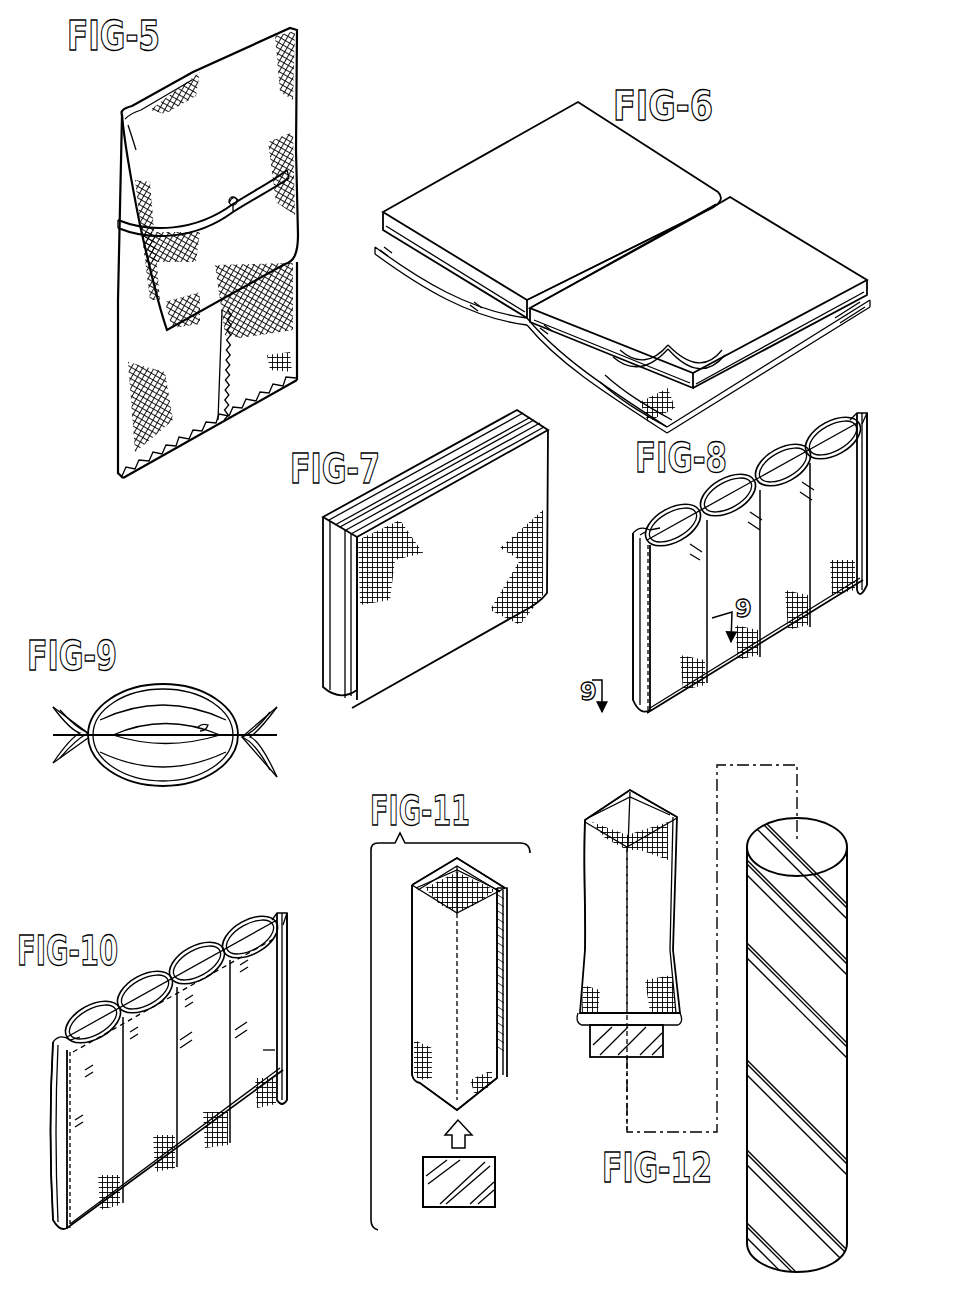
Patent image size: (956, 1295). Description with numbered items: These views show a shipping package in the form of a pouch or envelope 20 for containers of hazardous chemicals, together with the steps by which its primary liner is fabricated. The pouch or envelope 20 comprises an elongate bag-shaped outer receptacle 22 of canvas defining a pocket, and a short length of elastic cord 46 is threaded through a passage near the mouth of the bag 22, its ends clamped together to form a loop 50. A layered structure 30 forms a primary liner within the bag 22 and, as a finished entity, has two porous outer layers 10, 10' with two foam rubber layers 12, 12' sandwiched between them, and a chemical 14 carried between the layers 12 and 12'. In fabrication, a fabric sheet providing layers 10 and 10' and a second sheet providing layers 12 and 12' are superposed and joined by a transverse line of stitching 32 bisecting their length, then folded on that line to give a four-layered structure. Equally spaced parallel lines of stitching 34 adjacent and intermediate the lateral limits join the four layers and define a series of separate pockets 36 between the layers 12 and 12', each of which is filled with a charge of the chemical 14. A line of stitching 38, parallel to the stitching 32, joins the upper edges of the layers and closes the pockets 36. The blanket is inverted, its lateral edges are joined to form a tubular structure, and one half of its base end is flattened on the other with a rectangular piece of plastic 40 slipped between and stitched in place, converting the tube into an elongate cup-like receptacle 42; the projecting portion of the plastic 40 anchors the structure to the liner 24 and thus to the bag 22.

In FIG. 6, the outer layer 10 is at (617, 340).
In FIG. 7, the outer layer 10 is at (435, 554).
In FIG. 8, the outer layer 10 is at (700, 478).
In FIG. 9, the outer layer 10 is at (165, 706).
In FIG. 10, the outer layer 10 is at (143, 970).
In FIG. 11, the outer layer 10 is at (444, 984).
In FIG. 12, the outer layer 10 is at (646, 960).
In FIG. 6, the outer layer 10' is at (731, 367).
In FIG. 7, the outer layer 10' is at (477, 569).
In FIG. 8, the outer layer 10' is at (750, 572).
In FIG. 9, the outer layer 10' is at (165, 757).
In FIG. 10, the outer layer 10' is at (194, 1071).
In FIG. 11, the outer layer 10' is at (440, 891).
In FIG. 12, the outer layer 10' is at (649, 797).
In FIG. 6, the foam rubber layer 12 is at (552, 210).
In FIG. 7, the foam rubber layer 12 is at (426, 461).
In FIG. 8, the foam rubber layer 12 is at (735, 482).
In FIG. 9, the foam rubber layer 12 is at (189, 696).
In FIG. 10, the foam rubber layer 12 is at (172, 966).
In FIG. 6, the foam rubber layer 12' is at (698, 292).
In FIG. 7, the foam rubber layer 12' is at (437, 453).
In FIG. 8, the foam rubber layer 12' is at (727, 491).
In FIG. 9, the foam rubber layer 12' is at (186, 782).
In FIG. 10, the foam rubber layer 12' is at (171, 979).
In FIG. 8, the chemical 14 is at (780, 447).
In FIG. 9, the chemical 14 is at (158, 723).
In FIG. 5, the pouch or envelope 20 is at (125, 103).
In FIG. 5, the bag-shaped outer receptacle 22 is at (293, 82).
In FIG. 12, the liner 24 is at (825, 828).
In FIG. 10, the layered structure 30 is at (272, 1053).
In FIG. 6, the line of stitching 32 is at (694, 213).
In FIG. 8, the line of stitching 32 is at (777, 643).
In FIG. 10, the line of stitching 32 is at (248, 1133).
In FIG. 11, the line of stitching 32 is at (432, 880).
In FIG. 12, the line of stitching 32 is at (648, 800).
In FIG. 8, the stitching 34 is at (865, 490).
In FIG. 10, the stitching 34 is at (70, 1073).
In FIG. 11, the stitching 34 is at (457, 992).
In FIG. 12, the stitching 34 is at (627, 910).
In FIG. 8, the pocket 36 is at (848, 420).
In FIG. 9, the pocket 36 is at (220, 703).
In FIG. 10, the line of stitching 38 is at (288, 950).
In FIG. 11, the line of stitching 38 is at (437, 1085).
In FIG. 11, the rectangular piece of plastic 40 is at (432, 1182).
In FIG. 12, the rectangular piece of plastic 40 is at (612, 1043).
In FIG. 11, the cup-like receptacle 42 is at (504, 940).
In FIG. 12, the cup-like receptacle 42 is at (581, 835).
In FIG. 5, the elastic cord 46 is at (288, 168).
In FIG. 5, the loop 50 is at (115, 222).